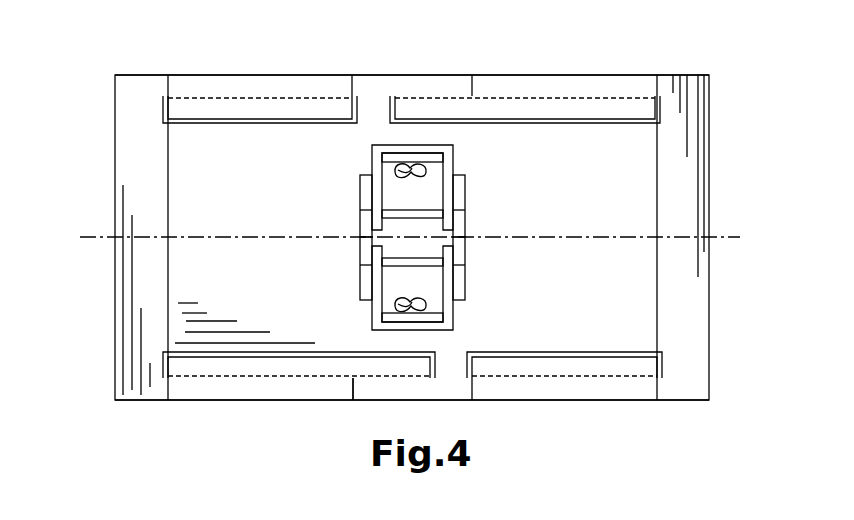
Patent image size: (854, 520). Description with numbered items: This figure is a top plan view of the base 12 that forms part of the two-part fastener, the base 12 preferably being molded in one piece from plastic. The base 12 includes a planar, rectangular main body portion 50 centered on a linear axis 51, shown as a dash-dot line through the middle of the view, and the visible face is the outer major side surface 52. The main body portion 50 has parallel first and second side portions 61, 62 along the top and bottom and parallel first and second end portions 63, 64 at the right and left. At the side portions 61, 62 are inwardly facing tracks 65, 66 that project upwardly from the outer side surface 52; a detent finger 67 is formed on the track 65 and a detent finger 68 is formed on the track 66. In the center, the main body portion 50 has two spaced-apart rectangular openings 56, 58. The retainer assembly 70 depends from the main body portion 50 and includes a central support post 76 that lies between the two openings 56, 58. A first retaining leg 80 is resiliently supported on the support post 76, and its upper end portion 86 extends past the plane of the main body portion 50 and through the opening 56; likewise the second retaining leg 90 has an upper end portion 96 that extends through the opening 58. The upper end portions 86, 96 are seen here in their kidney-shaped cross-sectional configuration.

The base 12 is at (100, 419).
The main body portion 50 is at (632, 203).
The linear axis 51 is at (83, 242).
The outer major side surface 52 is at (628, 168).
The rectangular opening 56 is at (459, 281).
The rectangular opening 58 is at (459, 190).
The first side portion 61 is at (330, 60).
The second side portion 62 is at (284, 412).
The first end portion 63 is at (722, 224).
The second end portion 64 is at (104, 193).
The track 65 is at (247, 110).
The track 66 is at (233, 380).
The detent finger 67 is at (430, 110).
The detent finger 68 is at (397, 370).
The retainer assembly 70 is at (336, 220).
The central support post 76 is at (425, 231).
The first retaining leg 80 is at (373, 310).
The upper end portion 86 is at (456, 313).
The second retaining leg 90 is at (372, 165).
The upper end portion 96 is at (422, 173).